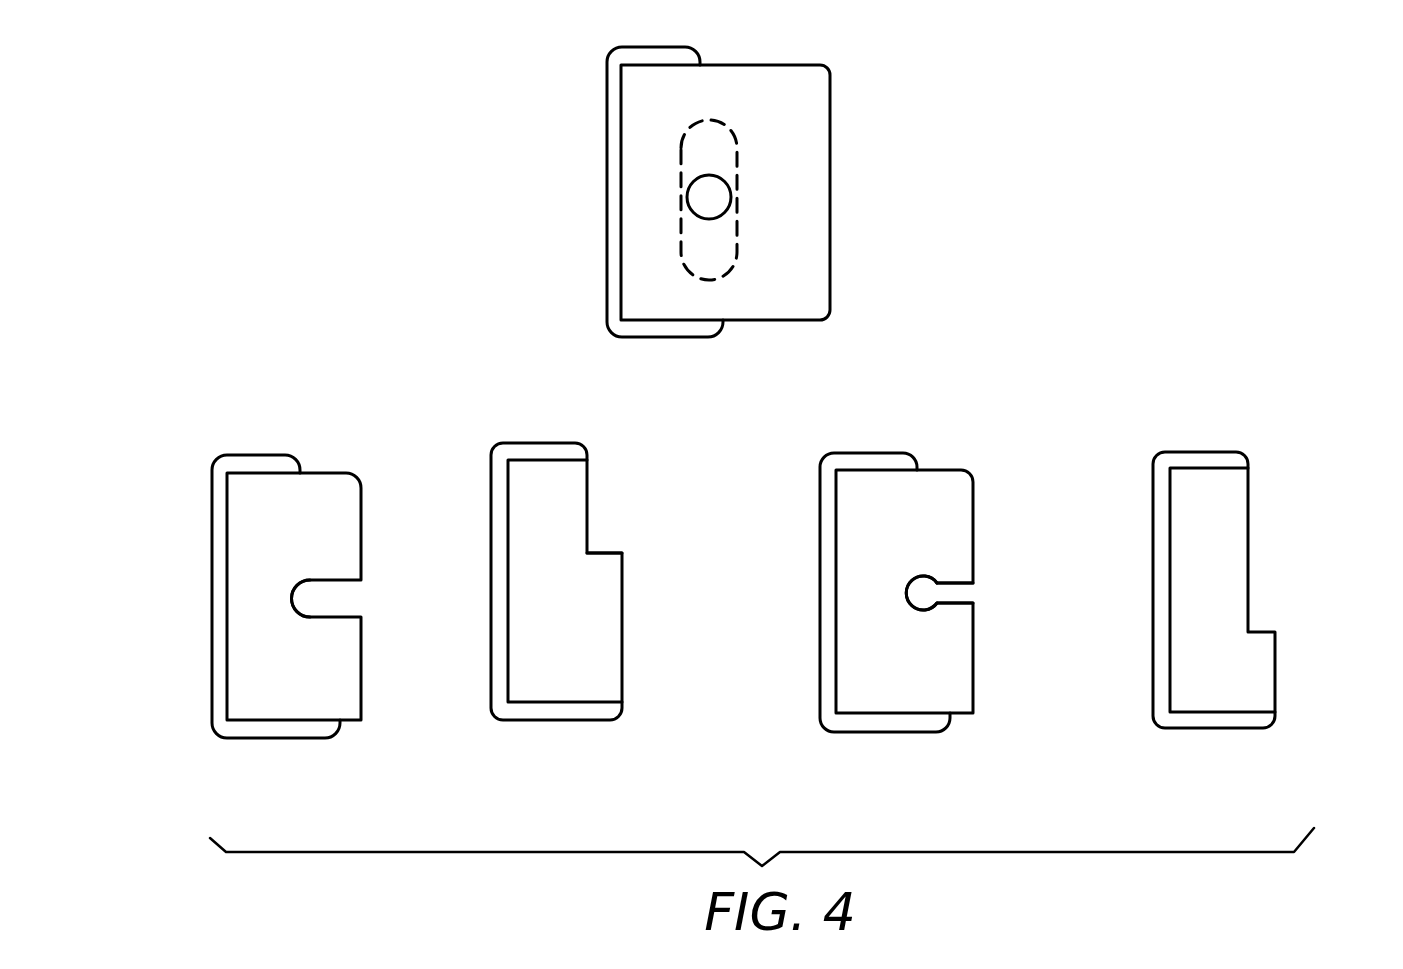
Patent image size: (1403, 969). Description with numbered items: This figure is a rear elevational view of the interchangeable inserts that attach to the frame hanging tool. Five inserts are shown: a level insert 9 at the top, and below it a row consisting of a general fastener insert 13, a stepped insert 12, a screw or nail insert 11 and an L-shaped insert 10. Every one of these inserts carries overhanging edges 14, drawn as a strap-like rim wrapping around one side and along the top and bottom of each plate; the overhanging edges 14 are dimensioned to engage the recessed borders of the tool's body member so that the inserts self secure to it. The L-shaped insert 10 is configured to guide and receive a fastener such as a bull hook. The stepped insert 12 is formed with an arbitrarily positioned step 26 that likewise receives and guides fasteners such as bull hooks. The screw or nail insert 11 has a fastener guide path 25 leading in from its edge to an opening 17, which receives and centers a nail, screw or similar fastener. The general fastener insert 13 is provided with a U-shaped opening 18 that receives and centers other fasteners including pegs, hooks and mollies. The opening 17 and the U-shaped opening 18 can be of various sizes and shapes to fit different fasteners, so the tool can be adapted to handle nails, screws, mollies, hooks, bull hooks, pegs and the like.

The level insert 9 is at (830, 210).
The L-shaped insert 10 is at (1248, 583).
The screw or nail insert 11 is at (960, 713).
The stepped insert 12 is at (567, 688).
The general fastener insert 13 is at (352, 720).
The overhanging edges 14 is at (697, 332).
The opening 17 is at (922, 587).
The U-shaped opening 18 is at (337, 595).
The fastener guide path 25 is at (962, 593).
The step 26 is at (598, 553).